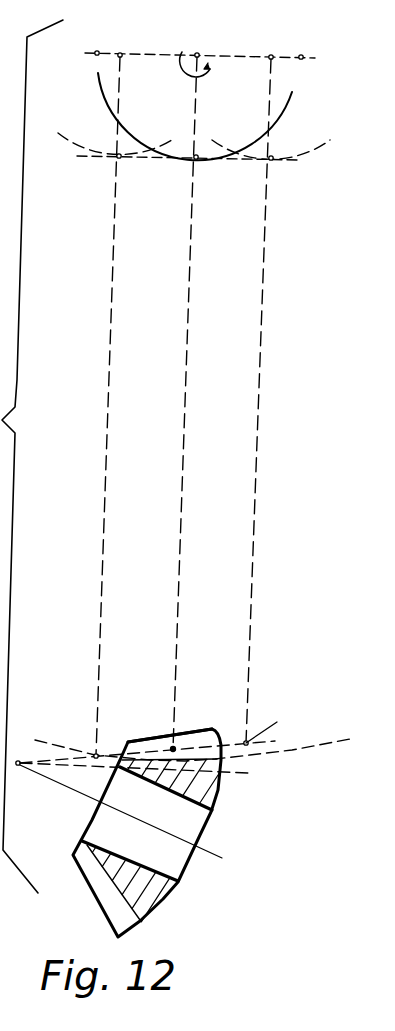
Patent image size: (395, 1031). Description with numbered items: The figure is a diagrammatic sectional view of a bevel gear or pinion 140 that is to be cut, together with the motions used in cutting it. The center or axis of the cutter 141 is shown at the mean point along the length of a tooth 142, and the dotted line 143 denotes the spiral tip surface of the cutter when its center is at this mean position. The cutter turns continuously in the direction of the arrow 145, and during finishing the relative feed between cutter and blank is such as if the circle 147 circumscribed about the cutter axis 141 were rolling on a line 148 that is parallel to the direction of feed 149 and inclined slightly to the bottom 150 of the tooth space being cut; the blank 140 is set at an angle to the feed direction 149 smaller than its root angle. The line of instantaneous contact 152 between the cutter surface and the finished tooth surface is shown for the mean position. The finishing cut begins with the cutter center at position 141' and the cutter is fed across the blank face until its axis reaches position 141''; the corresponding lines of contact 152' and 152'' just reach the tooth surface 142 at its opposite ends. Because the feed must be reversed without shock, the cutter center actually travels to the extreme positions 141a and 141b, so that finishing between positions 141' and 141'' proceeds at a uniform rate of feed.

The bevel gear or pinion 140 is at (212, 793).
The center or axis of the cutter 141 is at (208, 389).
The cutter center position 141' is at (278, 385).
The cutter center position 141'' is at (132, 390).
The extreme cutter center position 141a is at (303, 56).
The extreme cutter center position 141b is at (97, 51).
The tooth 142 is at (208, 736).
The spiral tip surface of the cutter 143 is at (292, 750).
The arrow 145 is at (183, 81).
The circle 147 is at (291, 96).
The line 148 is at (148, 158).
The direction of feed 149 is at (132, 809).
The bottom of the tooth space 150 is at (143, 770).
The line of instantaneous contact 152 is at (147, 721).
The line of contact 152' is at (271, 719).
The line of contact 152'' is at (122, 730).